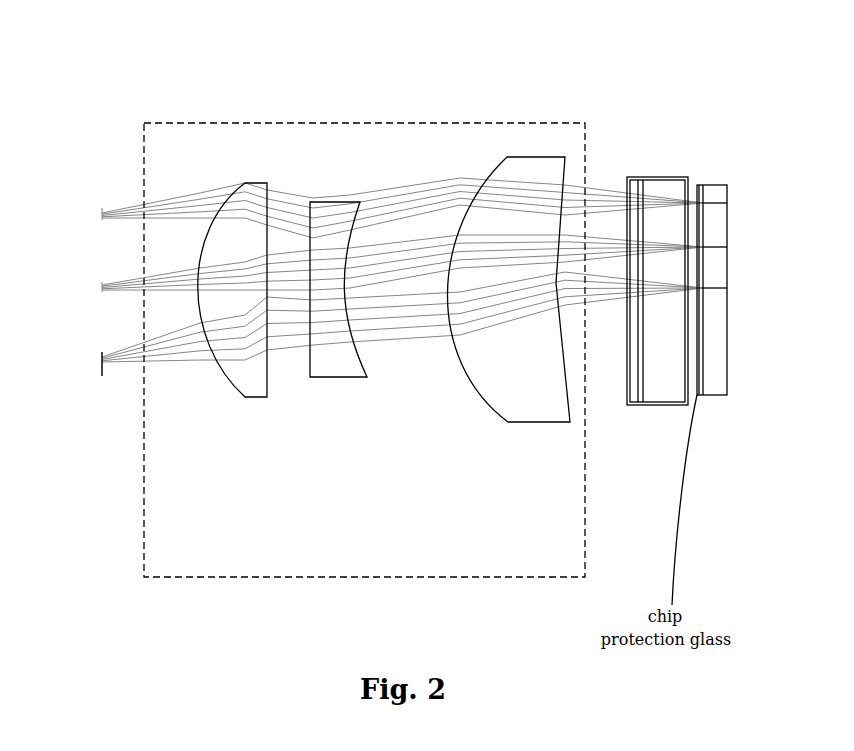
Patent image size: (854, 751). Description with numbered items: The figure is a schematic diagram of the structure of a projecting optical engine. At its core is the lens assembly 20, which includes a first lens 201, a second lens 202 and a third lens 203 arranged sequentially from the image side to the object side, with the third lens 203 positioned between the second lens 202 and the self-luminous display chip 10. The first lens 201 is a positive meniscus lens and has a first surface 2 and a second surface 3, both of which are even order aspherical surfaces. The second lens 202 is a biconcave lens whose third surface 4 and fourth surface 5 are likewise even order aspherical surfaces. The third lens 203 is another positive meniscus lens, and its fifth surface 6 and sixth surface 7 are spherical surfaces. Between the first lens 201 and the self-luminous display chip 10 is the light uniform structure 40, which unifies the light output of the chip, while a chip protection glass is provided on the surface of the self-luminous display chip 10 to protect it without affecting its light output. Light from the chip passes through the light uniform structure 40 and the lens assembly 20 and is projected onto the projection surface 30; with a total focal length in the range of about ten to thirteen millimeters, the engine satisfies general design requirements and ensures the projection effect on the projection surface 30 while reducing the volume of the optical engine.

The first surface 2 is at (212, 223).
The second surface 3 is at (263, 233).
The third surface 4 is at (313, 240).
The fourth surface 5 is at (345, 257).
The fifth surface 6 is at (483, 185).
The sixth surface 7 is at (563, 200).
The self-luminous display chip 10 is at (708, 395).
The lens assembly 20 is at (587, 503).
The projection surface 30 is at (123, 358).
The light uniform structure 40 is at (677, 387).
The first lens 201 is at (245, 368).
The second lens 202 is at (318, 375).
The third lens 203 is at (505, 393).